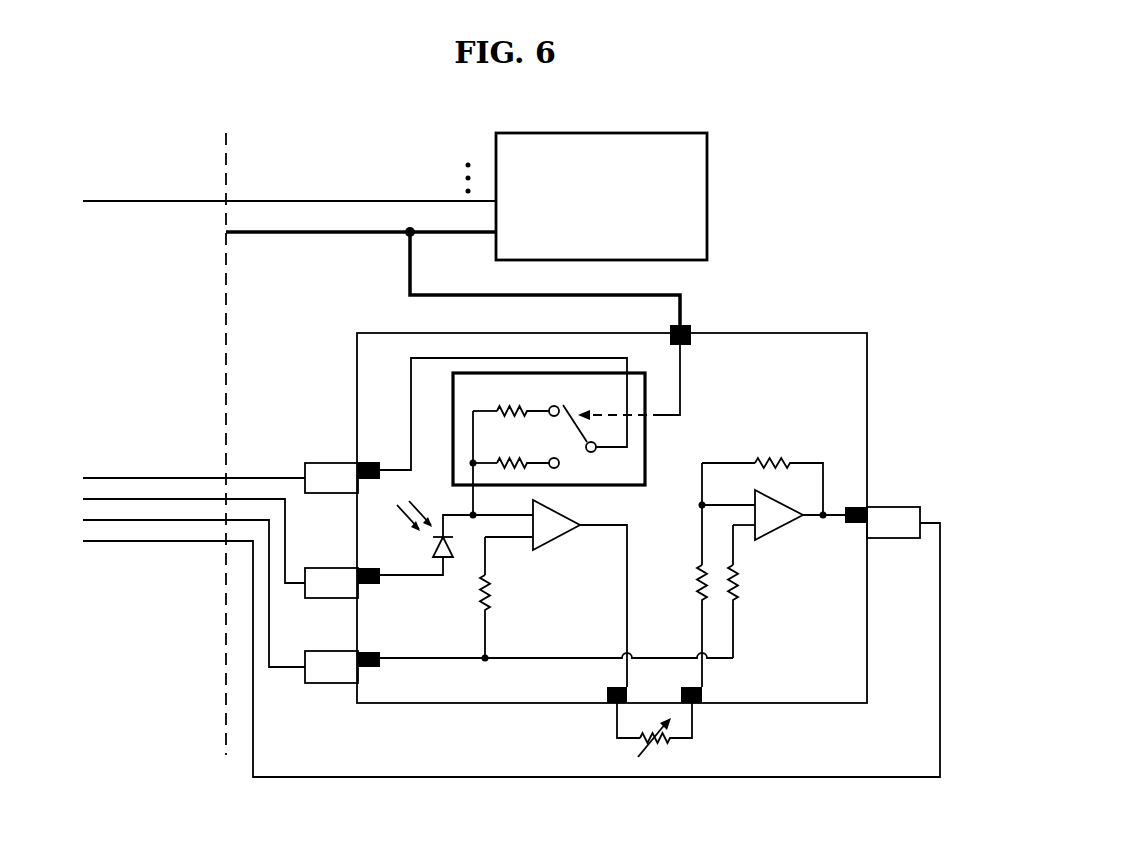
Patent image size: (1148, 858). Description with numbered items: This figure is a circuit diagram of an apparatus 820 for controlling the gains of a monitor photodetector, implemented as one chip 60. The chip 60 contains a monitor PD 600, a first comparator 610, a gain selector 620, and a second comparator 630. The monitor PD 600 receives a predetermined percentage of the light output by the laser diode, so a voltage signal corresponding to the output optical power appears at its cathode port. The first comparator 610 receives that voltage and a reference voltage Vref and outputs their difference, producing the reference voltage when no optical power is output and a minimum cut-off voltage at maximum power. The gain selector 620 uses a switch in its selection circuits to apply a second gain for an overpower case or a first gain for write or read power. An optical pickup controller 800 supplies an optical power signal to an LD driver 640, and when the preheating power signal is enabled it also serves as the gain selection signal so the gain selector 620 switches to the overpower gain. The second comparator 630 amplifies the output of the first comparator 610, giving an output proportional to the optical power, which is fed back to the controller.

The optical pickup controller 800 is at (147, 444).
The apparatus for controlling gains of a monitor PD 820 is at (917, 122).
The LD driver 640 is at (707, 157).
The chip 60 is at (803, 333).
The gain selector 620 is at (645, 485).
The monitor PD 600 is at (432, 548).
The first comparator 610 is at (556, 548).
The second comparator 630 is at (780, 540).